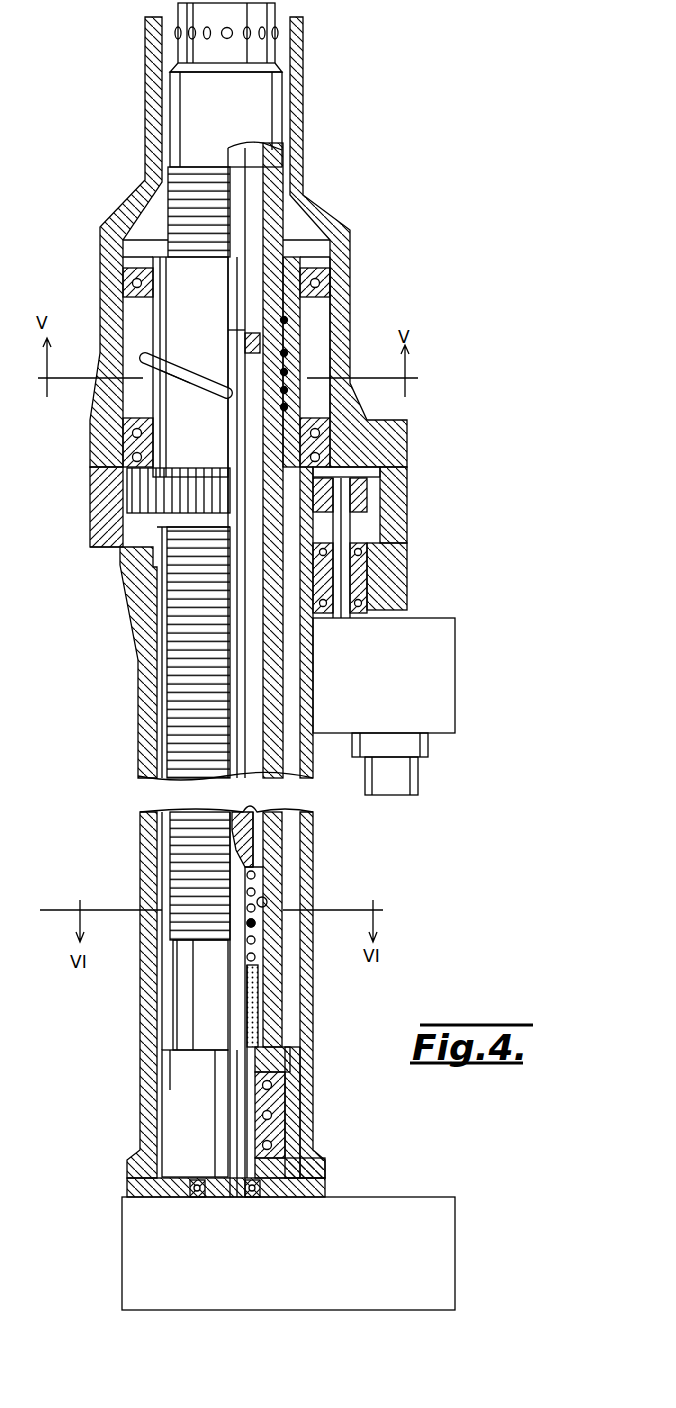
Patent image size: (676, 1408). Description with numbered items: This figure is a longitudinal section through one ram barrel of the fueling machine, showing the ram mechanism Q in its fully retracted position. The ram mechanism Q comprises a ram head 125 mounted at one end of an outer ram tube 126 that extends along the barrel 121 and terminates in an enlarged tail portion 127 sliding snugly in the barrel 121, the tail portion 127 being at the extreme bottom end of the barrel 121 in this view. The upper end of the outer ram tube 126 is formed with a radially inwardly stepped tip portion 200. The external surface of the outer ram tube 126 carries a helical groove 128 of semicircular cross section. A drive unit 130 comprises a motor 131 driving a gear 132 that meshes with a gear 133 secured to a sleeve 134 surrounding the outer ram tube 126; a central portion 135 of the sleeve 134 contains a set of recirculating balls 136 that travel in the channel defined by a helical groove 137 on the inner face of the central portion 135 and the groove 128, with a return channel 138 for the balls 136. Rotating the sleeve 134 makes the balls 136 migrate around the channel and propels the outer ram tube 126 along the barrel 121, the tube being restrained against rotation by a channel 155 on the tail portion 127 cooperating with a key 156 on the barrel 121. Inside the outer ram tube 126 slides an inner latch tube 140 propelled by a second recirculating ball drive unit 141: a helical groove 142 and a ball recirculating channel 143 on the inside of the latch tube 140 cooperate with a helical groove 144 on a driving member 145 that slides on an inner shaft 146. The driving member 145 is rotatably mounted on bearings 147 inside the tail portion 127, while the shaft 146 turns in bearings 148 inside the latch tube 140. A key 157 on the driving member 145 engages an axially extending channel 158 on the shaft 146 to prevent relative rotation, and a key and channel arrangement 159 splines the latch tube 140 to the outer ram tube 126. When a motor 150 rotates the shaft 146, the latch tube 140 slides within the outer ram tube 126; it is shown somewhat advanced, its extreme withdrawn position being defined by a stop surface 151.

The tip portion 200 is at (262, 12).
The barrel 121 is at (150, 100).
The ram head 125 is at (262, 107).
The outer ram tube 126 is at (278, 225).
The tail portion 127 is at (180, 1100).
The helical groove 128 is at (283, 177).
The drive unit 130 is at (477, 663).
The motor 131 is at (400, 788).
The gear 132 is at (357, 497).
The gear 133 is at (140, 503).
The sleeve 134 is at (177, 460).
The central portion 135 is at (295, 393).
The recirculating balls 136 is at (286, 330).
The helical groove 137 is at (250, 347).
The return channel 138 is at (137, 387).
The inner latch tube 140 is at (285, 822).
The second recirculating ball drive unit 141 is at (262, 935).
The helical groove 142 is at (255, 921).
The ball recirculating channel 143 is at (266, 898).
The helical groove 144 is at (253, 1010).
The driving member 145 is at (250, 1058).
The inner shaft 146 is at (237, 1125).
The bearings 147 is at (283, 1100).
The bearings 148 is at (257, 343).
The motor 150 is at (122, 1248).
The stop surface 151 is at (247, 1042).
The channel 155 is at (162, 1068).
The key 156 is at (157, 998).
The key 157 is at (252, 810).
The axially extending channel 158 is at (233, 850).
The key and channel arrangement 159 is at (258, 985).
The ram mechanism Q is at (112, 623).